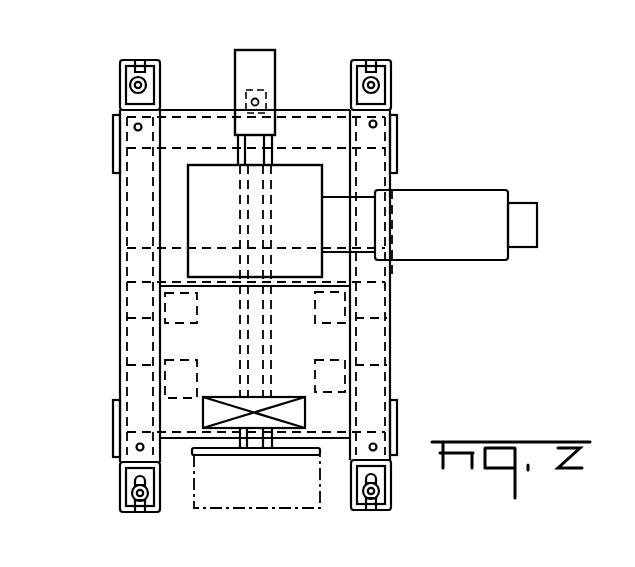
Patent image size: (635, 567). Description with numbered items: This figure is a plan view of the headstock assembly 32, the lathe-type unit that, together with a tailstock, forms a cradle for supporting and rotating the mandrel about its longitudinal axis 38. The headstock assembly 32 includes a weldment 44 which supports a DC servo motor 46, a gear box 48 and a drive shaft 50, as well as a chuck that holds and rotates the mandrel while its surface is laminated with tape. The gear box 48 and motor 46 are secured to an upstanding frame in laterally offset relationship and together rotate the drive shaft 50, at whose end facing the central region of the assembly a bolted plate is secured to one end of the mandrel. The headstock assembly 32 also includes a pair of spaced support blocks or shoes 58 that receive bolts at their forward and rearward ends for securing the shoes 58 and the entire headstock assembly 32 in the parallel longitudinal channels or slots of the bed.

The headstock assembly 32 is at (108, 178).
The longitudinal axis 38 is at (273, 145).
The weldment 44 is at (393, 190).
The DC servo motor 46 is at (483, 202).
The gear box 48 is at (210, 163).
The drive shaft 50 is at (237, 157).
The support blocks or shoes 58 is at (120, 313).